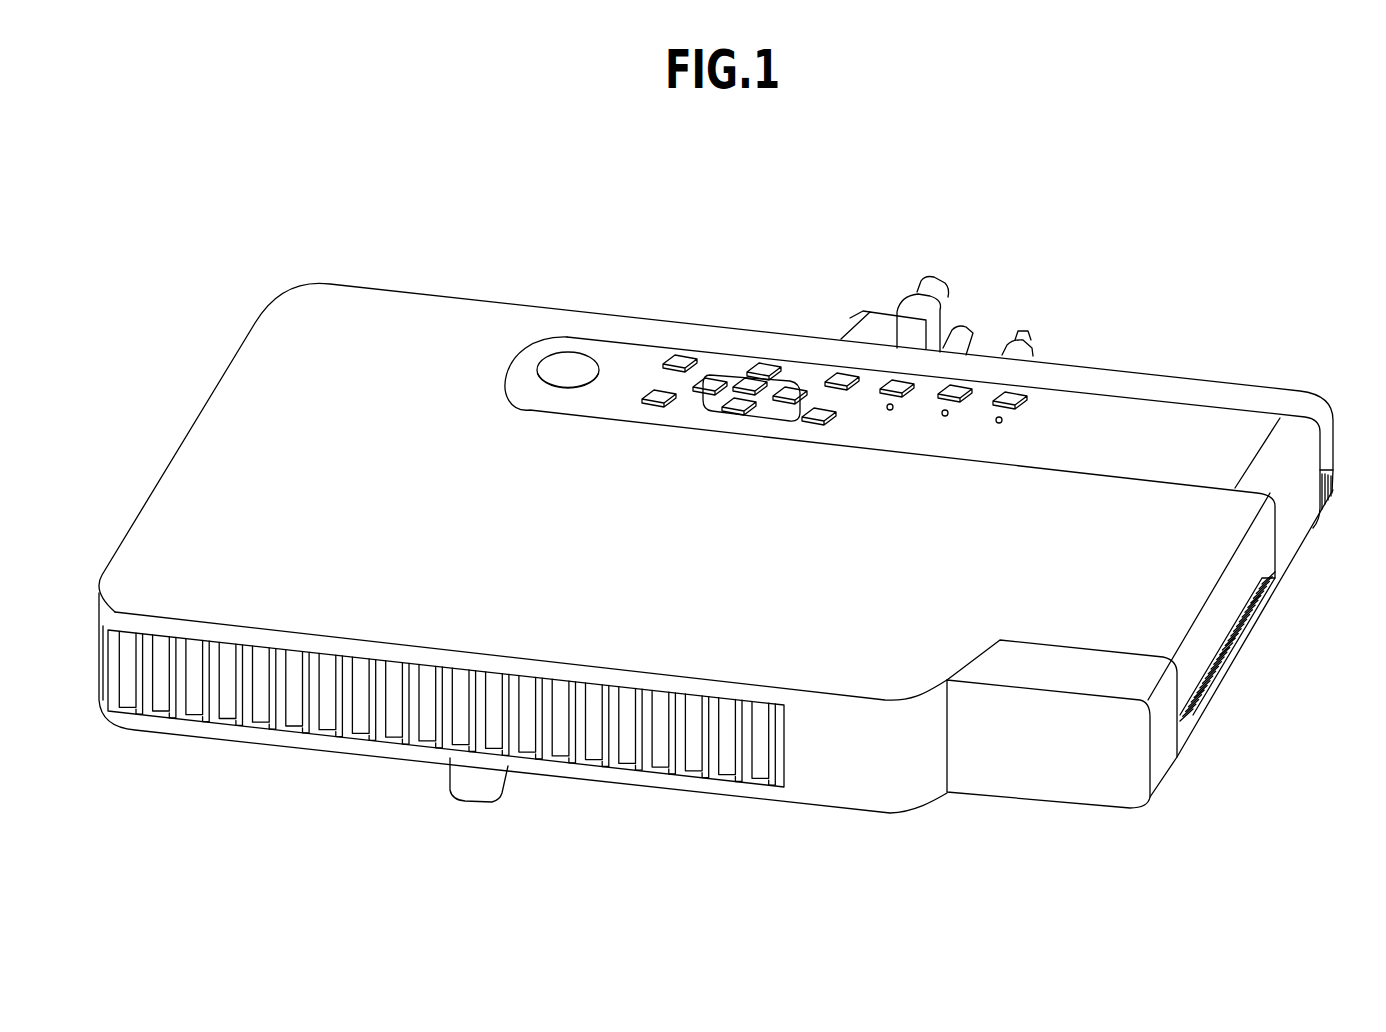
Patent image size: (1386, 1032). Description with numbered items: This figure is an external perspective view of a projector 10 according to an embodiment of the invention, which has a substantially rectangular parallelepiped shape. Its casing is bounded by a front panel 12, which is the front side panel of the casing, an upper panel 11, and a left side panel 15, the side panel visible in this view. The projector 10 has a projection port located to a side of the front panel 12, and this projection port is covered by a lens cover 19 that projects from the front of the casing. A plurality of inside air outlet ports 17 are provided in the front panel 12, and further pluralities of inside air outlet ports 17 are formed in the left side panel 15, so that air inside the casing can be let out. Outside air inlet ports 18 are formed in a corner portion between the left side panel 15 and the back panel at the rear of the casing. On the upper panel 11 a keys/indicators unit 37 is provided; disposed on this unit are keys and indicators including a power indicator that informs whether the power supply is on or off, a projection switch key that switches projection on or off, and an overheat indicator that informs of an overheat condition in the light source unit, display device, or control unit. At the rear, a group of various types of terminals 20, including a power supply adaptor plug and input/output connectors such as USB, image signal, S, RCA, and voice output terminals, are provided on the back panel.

The projector 10 is at (803, 190).
The upper panel 11 is at (461, 314).
The front panel 12 is at (825, 753).
The left side panel 15 is at (1213, 630).
The inside air outlet ports 17 is at (713, 770).
The outside air inlet ports 18 is at (1337, 488).
The lens cover 19 is at (1055, 763).
The terminals 20 is at (968, 307).
The keys/indicators unit 37 is at (728, 358).